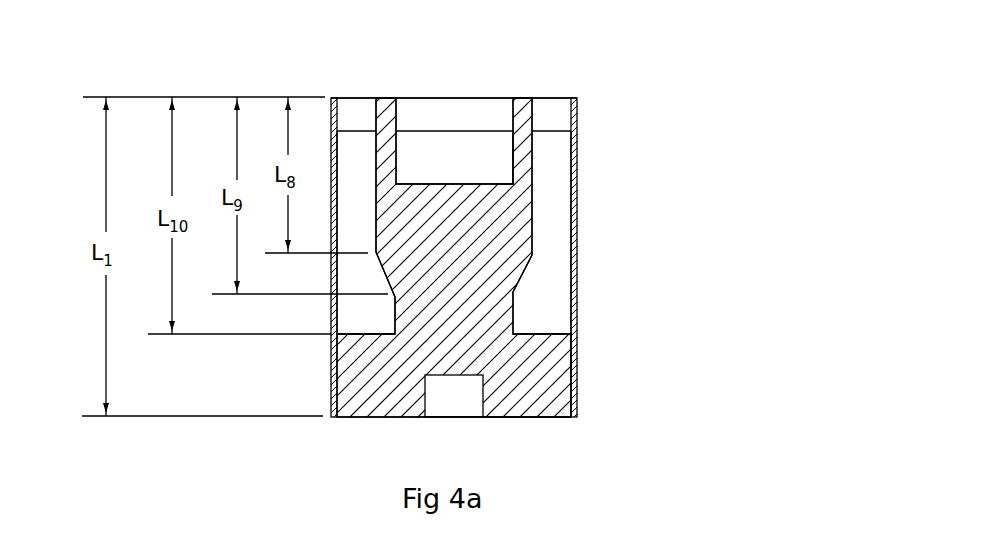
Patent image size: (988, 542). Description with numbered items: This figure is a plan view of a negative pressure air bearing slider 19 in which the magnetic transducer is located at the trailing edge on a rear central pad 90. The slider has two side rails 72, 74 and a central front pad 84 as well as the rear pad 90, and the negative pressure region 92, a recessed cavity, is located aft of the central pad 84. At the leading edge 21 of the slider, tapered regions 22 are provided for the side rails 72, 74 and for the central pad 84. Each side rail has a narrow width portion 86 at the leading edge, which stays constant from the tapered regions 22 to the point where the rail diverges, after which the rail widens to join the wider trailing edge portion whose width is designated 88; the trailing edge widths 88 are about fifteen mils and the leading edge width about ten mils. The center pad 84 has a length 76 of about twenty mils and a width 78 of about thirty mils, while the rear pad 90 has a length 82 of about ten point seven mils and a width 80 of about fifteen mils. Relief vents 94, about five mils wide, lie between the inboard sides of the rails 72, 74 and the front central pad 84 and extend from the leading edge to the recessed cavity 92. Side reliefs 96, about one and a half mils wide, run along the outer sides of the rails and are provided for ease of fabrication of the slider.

The valve body 19 is at (576, 422).
The leading edge 21 is at (453, 98).
The tapered regions 22 is at (345, 108).
The side rail 72 is at (383, 331).
The side rail 74 is at (559, 331).
The length of center pad 76 is at (513, 150).
The width of center pad 78 is at (506, 189).
The width of rear pad 80 is at (473, 370).
The length of rear pad 82 is at (488, 400).
The central front pad 84 is at (470, 172).
The narrow width portion 86 is at (349, 231).
The width at trailing edge of side rails 88 is at (358, 336).
The rear central pad 90 is at (471, 411).
The negative pressure region 92 is at (471, 300).
The relief vents 94 is at (387, 108).
The side reliefs 96 is at (332, 284).